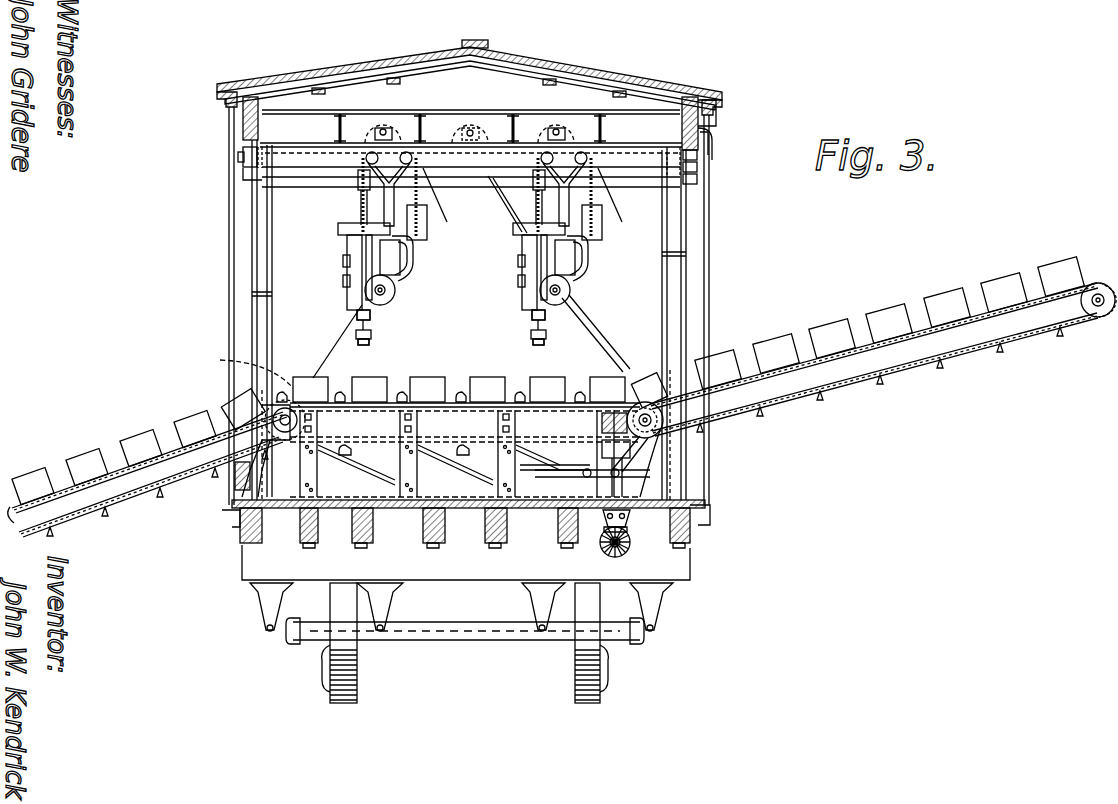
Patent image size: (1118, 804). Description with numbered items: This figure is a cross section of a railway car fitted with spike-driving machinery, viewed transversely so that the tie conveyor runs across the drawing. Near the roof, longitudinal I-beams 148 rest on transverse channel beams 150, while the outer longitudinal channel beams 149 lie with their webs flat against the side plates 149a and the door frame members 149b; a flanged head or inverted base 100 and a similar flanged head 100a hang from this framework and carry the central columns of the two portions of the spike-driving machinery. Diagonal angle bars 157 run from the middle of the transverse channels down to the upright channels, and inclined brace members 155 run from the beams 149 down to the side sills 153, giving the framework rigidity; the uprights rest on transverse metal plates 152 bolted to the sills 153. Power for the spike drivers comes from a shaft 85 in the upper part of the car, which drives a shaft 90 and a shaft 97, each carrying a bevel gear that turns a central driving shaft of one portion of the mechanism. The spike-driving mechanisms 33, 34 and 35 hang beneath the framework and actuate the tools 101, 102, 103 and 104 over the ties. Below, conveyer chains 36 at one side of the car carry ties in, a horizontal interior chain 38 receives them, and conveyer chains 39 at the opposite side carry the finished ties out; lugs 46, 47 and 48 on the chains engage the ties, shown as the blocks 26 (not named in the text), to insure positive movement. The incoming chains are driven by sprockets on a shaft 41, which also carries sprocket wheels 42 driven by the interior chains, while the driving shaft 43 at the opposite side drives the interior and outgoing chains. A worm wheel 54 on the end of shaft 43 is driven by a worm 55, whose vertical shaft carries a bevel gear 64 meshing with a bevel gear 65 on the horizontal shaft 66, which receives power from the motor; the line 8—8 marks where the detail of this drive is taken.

The longitudinal I-beams 148 is at (336, 110).
The outer channel beams 149 is at (672, 118).
The side plates 149a is at (713, 107).
The door frame members 149b is at (716, 130).
The flanged head or inverted base 100 is at (461, 167).
The flanged head or inverted base 100a is at (650, 163).
The transverse beams 150 is at (265, 180).
The shaft 97 is at (386, 128).
The shaft 85 is at (472, 125).
The shaft 90 is at (557, 128).
The spike-driving mechanism 33 is at (384, 248).
The spike-driving mechanism 34 is at (556, 248).
The spike-driving mechanism 35 is at (614, 218).
The spike-driving tool 102 is at (370, 333).
The spike-driving tool 101 is at (372, 342).
The spike-driving tool 103 is at (535, 328).
The spike-driving tool 104 is at (532, 338).
The inclined brace members 155 is at (258, 295).
The diagonal members 157 is at (342, 326).
The lugs 47 is at (408, 380).
The box 26 is at (306, 380).
The section line 8— 8 is at (517, 400).
The worm 55 is at (633, 384).
The metal plates 152 is at (233, 520).
The sills 153 is at (245, 553).
The conveyer chains 36 is at (70, 474).
The lugs 46 is at (176, 411).
The sprocket wheels 42 is at (267, 427).
The shaft 41 is at (277, 410).
The conveyer chain 38 is at (240, 364).
The conveyer chains 39 is at (807, 366).
The lugs 48 is at (893, 298).
The driving shaft 43 is at (664, 434).
The worm wheel 54 is at (664, 414).
The bevel gear 64 is at (630, 530).
The bevel gear 65 is at (622, 548).
The horizontal shaft 66 is at (636, 550).